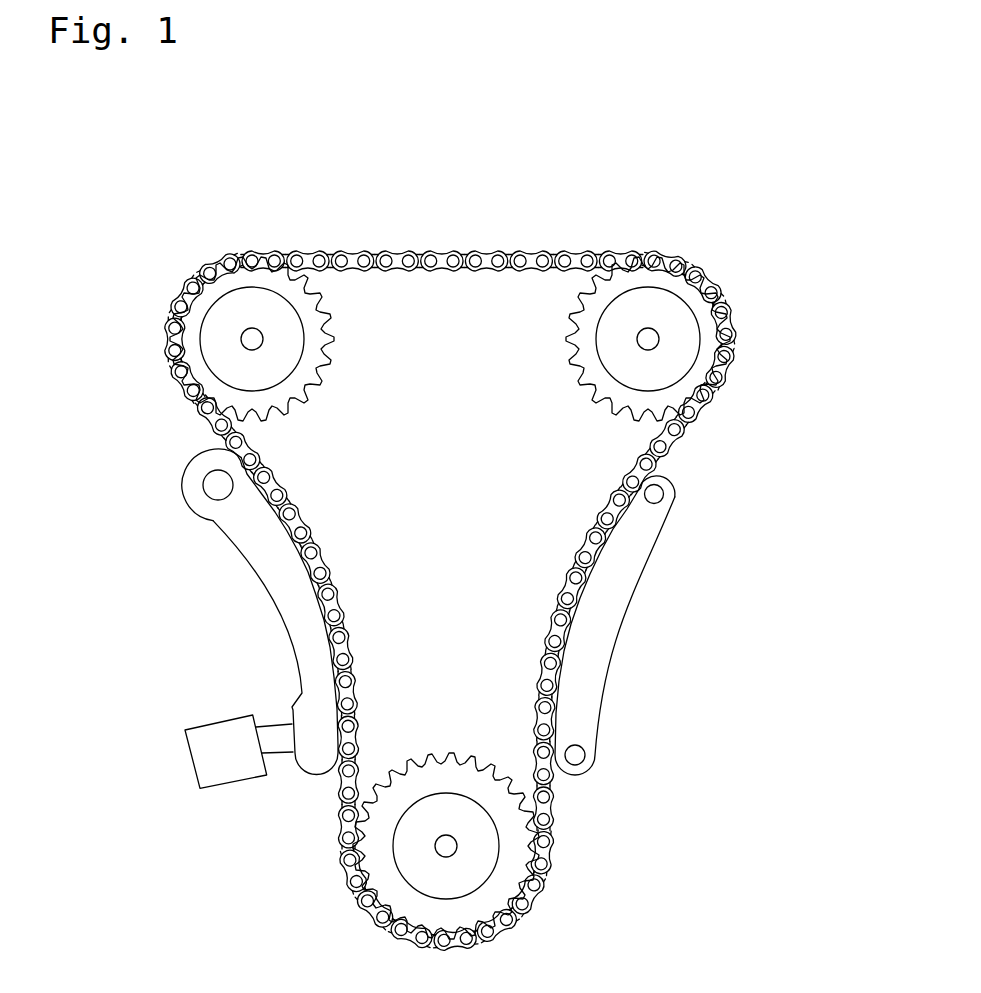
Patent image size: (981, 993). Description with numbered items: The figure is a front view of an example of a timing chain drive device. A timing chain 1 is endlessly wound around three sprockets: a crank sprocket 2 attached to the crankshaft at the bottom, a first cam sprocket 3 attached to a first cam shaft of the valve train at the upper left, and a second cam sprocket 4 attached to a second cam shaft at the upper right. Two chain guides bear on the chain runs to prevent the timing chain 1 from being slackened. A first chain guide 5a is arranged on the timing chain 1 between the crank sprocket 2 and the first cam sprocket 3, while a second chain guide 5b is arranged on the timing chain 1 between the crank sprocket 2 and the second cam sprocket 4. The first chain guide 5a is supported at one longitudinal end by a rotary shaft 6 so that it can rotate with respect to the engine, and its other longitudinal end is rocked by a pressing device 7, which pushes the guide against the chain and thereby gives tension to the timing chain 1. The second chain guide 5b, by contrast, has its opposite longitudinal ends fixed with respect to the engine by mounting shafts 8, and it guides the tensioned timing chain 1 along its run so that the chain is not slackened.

The timing chain 1 is at (488, 237).
The crank sprocket 2 is at (467, 863).
The first cam sprocket 3 is at (232, 315).
The second cam sprocket 4 is at (666, 311).
The first chain guide 5a is at (263, 553).
The second chain guide 5b is at (597, 600).
The rotary shaft 6 is at (216, 488).
The pressing device 7 is at (218, 748).
The mounting shafts 8 is at (664, 492).